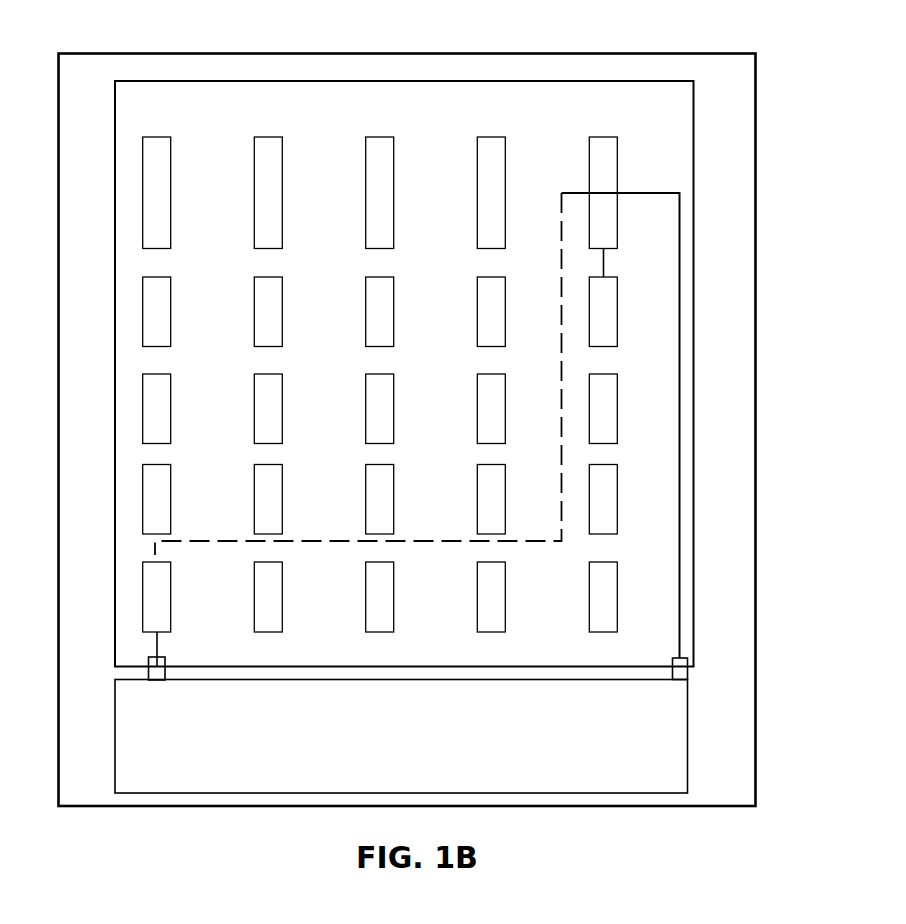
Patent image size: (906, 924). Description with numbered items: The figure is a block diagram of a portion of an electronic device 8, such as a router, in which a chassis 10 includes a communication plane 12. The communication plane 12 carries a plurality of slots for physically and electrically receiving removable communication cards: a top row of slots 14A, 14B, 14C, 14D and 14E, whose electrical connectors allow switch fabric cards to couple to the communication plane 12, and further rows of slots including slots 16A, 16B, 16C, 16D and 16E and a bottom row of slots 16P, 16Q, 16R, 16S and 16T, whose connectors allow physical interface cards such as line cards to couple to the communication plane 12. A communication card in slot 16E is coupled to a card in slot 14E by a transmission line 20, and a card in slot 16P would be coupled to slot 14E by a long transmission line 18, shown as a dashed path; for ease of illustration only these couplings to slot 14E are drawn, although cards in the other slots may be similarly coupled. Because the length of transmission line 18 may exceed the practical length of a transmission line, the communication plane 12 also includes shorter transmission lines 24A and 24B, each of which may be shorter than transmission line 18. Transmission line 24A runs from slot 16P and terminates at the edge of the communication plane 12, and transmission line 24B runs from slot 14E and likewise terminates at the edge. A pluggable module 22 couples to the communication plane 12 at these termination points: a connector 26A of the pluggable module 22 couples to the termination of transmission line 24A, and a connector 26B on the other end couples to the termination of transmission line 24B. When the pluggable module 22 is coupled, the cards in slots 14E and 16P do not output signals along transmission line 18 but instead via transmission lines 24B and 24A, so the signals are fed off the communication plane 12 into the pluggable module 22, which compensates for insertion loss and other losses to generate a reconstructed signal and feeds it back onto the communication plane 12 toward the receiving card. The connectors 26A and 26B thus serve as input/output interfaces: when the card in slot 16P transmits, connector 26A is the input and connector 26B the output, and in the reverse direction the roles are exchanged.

The electronic device 8 is at (646, 34).
The chassis 10 is at (700, 53).
The communication plane 12 is at (694, 265).
The slot 14A is at (156, 137).
The slot 14B is at (267, 137).
The slot 14C is at (379, 137).
The slot 14D is at (490, 137).
The slot 14E is at (602, 137).
The slot 16A is at (171, 314).
The slot 16B is at (282, 314).
The slot 16C is at (394, 314).
The slot 16D is at (505, 314).
The slot 16E is at (617, 314).
The slot 16P is at (171, 598).
The slot 16Q is at (282, 598).
The slot 16R is at (394, 598).
The slot 16S is at (505, 598).
The slot 16T is at (617, 598).
The transmission line 18 is at (561, 452).
The transmission line 20 is at (604, 270).
The pluggable module 22 is at (401, 737).
The transmission line 24A is at (159, 658).
The transmission line 24B is at (680, 443).
The connector 26A is at (158, 674).
The connector 26B is at (683, 674).